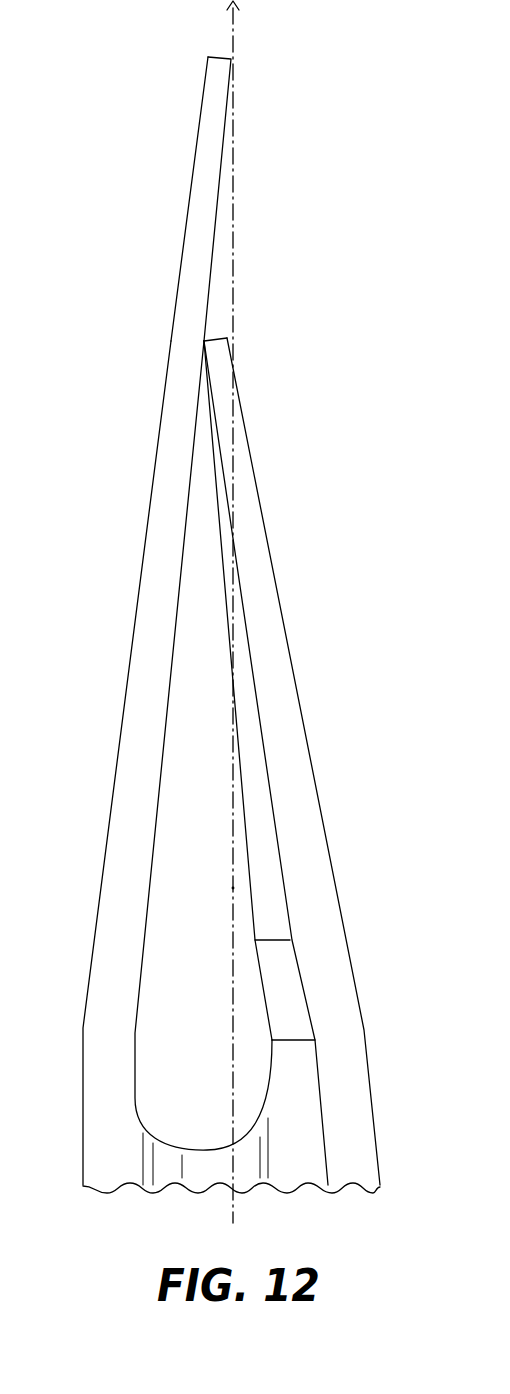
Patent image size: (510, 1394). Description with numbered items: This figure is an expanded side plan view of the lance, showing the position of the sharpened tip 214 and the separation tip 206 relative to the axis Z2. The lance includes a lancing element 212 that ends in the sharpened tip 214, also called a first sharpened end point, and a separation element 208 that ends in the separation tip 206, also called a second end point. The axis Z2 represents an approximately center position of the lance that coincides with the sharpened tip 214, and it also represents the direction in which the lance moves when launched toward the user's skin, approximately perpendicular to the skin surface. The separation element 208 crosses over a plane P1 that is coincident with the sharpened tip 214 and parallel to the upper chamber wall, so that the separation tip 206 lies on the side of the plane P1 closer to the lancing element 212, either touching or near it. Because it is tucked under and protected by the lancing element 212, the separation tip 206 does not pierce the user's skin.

The separation tip 206 is at (218, 339).
The separation element 208 is at (283, 693).
The lancing element 212 is at (125, 767).
The sharpened tip 214 is at (222, 56).
The plane P1 is at (233, 888).
The axis Z2 is at (238, 627).